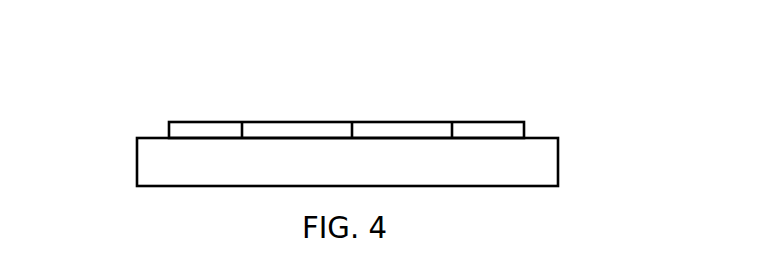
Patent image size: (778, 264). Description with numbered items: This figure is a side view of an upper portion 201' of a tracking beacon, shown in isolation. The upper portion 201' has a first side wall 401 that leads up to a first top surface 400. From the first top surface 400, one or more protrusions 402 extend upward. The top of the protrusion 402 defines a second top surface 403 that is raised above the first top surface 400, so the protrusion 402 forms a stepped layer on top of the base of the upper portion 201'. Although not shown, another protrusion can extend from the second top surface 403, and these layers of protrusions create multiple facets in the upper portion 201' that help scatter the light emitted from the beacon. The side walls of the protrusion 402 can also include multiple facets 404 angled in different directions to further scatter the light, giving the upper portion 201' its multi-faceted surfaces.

The upper portion 201' is at (372, 103).
The first top surface 400 is at (155, 138).
The first side wall 401 is at (548, 163).
The protrusion 402 is at (527, 130).
The second top surface 403 is at (473, 122).
The facets 404 is at (312, 130).